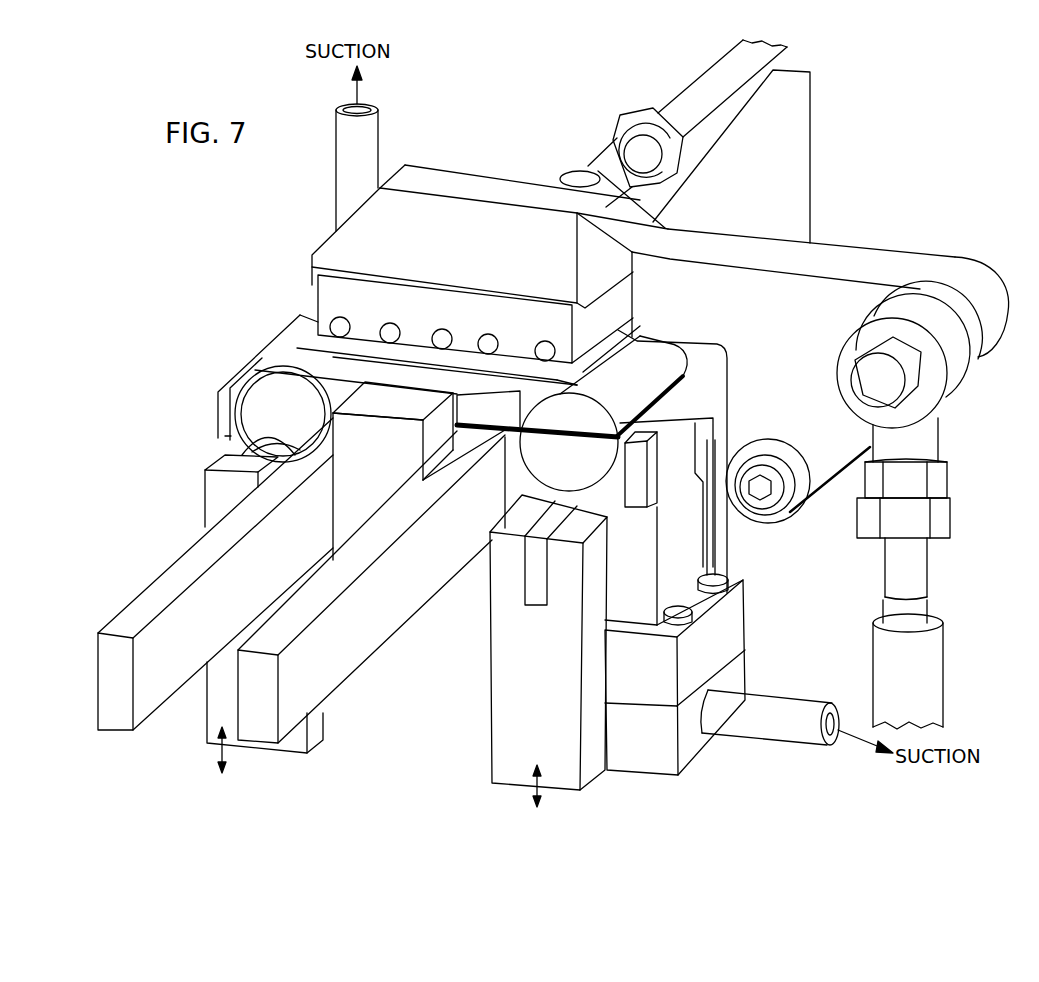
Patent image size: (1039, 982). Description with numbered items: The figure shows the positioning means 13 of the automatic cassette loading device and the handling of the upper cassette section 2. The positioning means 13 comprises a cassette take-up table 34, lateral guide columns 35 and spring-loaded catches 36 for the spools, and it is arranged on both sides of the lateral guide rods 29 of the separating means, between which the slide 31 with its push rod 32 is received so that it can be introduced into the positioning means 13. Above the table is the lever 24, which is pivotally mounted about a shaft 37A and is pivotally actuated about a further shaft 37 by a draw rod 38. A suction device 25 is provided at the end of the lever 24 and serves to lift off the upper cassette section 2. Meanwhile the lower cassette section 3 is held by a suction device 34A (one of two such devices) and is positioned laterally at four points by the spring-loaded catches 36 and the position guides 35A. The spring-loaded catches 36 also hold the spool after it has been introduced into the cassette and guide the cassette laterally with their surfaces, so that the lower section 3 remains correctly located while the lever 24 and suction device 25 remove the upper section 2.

The upper cassette section 2 is at (277, 358).
The lower cassette section 3 is at (227, 408).
The positioning means 13 is at (195, 524).
The lever 24 is at (822, 290).
The suction device 25 is at (338, 296).
The lateral guide rods 29 is at (145, 693).
The slide 31 is at (437, 418).
The push rod 32 is at (688, 102).
The cassette take-up table 34 is at (697, 543).
The suction device 34A is at (667, 526).
The lateral guide columns 35 is at (223, 470).
The position guides 35A is at (540, 527).
The spring-loaded catches 36 is at (230, 435).
The shaft 37 is at (773, 485).
The shaft 37A is at (900, 387).
The draw rod 38 is at (927, 658).